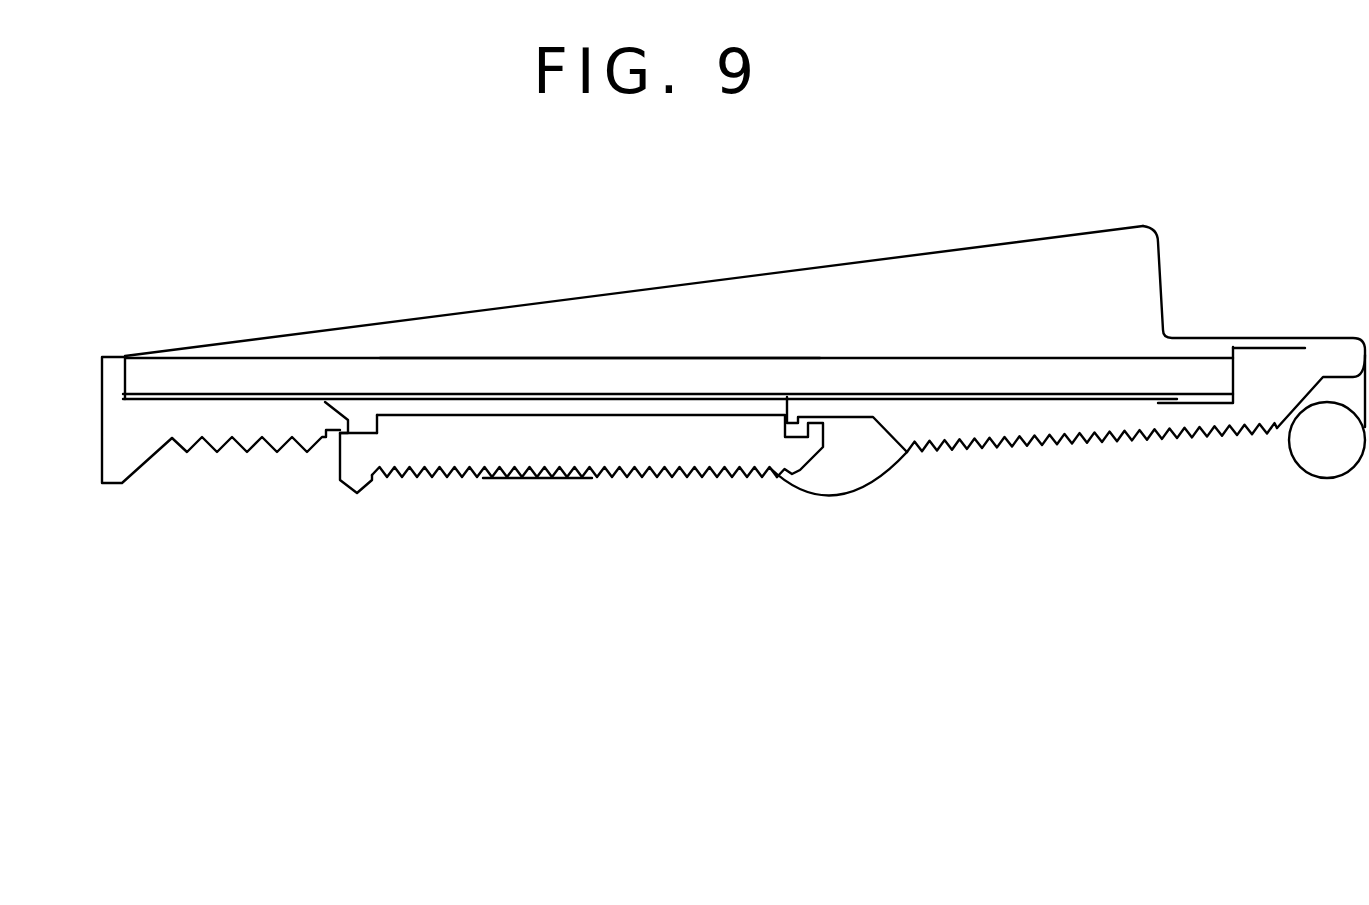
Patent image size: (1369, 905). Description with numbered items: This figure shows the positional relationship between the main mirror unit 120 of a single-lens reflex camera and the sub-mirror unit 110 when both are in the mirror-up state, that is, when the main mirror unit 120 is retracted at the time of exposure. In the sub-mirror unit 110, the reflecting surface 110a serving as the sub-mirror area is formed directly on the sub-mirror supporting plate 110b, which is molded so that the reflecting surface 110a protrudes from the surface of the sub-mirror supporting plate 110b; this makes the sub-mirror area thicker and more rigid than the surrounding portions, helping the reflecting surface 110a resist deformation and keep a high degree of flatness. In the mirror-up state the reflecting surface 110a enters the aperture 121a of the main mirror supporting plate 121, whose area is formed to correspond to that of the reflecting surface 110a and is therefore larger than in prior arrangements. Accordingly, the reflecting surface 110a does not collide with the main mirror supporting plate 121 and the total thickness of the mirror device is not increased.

The sub-mirror unit 110 is at (783, 240).
The reflecting surface 110a is at (597, 420).
The sub-mirror supporting plate 110b is at (417, 455).
The main mirror unit 120 is at (257, 357).
The main mirror supporting plate 121 is at (183, 443).
The aperture 121a is at (363, 410).